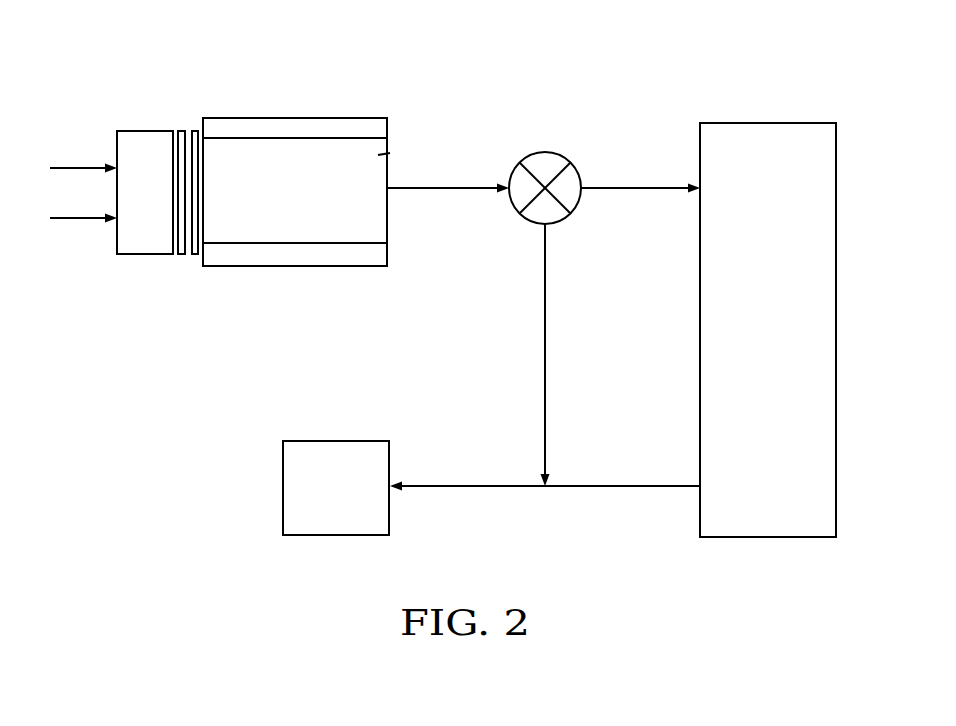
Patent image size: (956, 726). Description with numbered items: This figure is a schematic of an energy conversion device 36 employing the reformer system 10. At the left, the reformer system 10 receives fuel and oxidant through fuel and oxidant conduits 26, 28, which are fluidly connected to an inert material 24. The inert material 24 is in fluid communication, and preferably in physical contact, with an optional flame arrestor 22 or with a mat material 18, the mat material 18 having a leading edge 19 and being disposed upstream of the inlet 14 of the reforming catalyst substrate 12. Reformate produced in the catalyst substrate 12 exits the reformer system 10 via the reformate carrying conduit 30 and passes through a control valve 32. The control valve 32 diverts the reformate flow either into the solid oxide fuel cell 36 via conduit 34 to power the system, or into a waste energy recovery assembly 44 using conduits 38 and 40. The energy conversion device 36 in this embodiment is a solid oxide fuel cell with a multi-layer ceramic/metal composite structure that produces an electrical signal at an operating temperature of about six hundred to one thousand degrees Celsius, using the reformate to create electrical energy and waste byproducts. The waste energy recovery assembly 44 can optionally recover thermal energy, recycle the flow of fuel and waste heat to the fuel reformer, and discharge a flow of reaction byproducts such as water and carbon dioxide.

The reformer system 10 is at (342, 115).
The reforming catalyst substrate 12 is at (390, 153).
The inlet 14 is at (212, 190).
The mat material 18 is at (197, 130).
The leading edge 19 is at (203, 139).
The flame arrestor 22 is at (183, 255).
The inert material 24 is at (137, 131).
The fuel conduit 26 is at (75, 168).
The oxidant conduit 28 is at (75, 218).
The reformate carrying conduit 30 is at (423, 188).
The control valve 32 is at (550, 152).
The conduit 34 is at (617, 188).
The energy conversion device 36 is at (793, 123).
The conduit 38 is at (545, 317).
The conduit 40 is at (518, 486).
The waste energy recovery assembly 44 is at (302, 441).